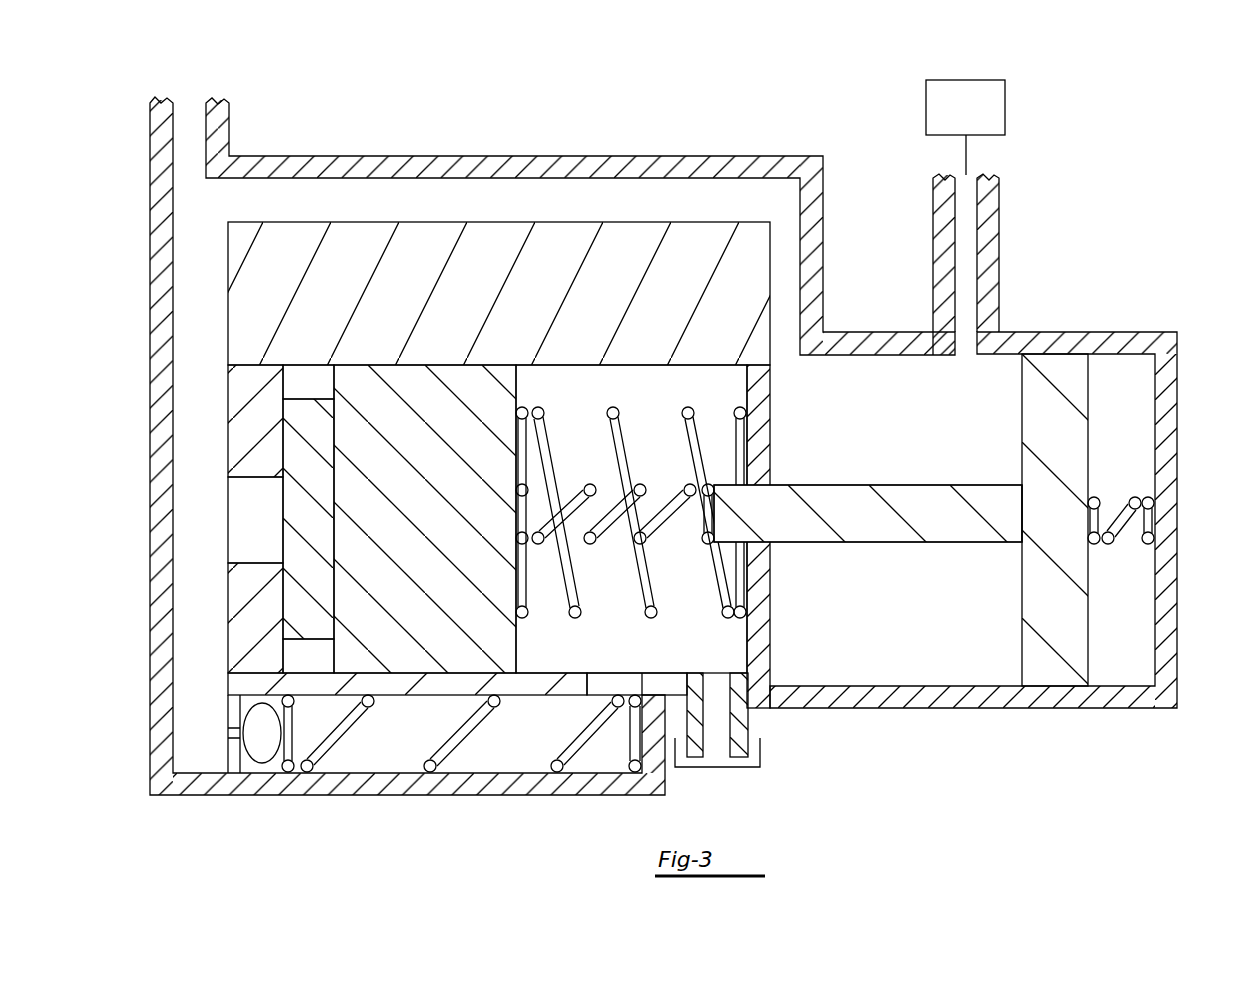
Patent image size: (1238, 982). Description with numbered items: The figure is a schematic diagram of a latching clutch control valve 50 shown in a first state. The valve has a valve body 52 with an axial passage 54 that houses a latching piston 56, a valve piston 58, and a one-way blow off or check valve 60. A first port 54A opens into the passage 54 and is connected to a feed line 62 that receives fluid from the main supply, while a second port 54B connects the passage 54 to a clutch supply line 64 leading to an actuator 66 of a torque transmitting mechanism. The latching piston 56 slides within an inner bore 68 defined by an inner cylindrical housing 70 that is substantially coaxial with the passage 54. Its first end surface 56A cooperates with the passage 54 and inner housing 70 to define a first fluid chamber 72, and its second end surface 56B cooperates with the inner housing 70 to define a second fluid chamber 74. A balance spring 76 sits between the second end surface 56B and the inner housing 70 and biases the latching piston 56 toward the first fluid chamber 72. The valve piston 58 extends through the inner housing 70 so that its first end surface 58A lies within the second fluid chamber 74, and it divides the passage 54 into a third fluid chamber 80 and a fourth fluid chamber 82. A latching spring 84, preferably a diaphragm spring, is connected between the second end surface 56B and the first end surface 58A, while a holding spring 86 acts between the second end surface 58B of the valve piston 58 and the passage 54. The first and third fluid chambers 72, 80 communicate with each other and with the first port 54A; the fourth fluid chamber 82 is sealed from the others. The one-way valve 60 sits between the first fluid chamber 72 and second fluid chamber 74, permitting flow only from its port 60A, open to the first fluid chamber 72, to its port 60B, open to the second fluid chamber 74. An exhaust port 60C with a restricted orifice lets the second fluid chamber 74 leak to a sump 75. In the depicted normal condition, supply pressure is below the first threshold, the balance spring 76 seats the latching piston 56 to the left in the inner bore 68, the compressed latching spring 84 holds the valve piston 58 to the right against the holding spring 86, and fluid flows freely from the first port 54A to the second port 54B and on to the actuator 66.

The latching clutch control valve 50 is at (1037, 82).
The valve body 52 is at (691, 399).
The axial passage 54 is at (527, 178).
The first port 54A is at (198, 117).
The second port 54B is at (965, 355).
The latching piston 56 is at (385, 530).
The first end surface 56A is at (278, 527).
The second end surface 56B is at (528, 470).
The valve piston 58 is at (936, 520).
The first end surface 58A is at (700, 517).
The second end surface 58B is at (1090, 448).
The one-way valve 60 is at (428, 740).
The port 60A is at (228, 735).
The port 60B is at (628, 685).
The exhaust port 60C is at (717, 683).
The feed line 62 is at (205, 140).
The clutch supply line 64 is at (967, 225).
The actuator 66 is at (977, 117).
The inner bore 68 is at (550, 365).
The inner cylindrical housing 70 is at (534, 279).
The first fluid chamber 72 is at (186, 467).
The second fluid chamber 74 is at (667, 443).
The sump 75 is at (760, 752).
The balance spring 76 is at (631, 496).
The third fluid chamber 80 is at (847, 362).
The fourth fluid chamber 82 is at (1137, 475).
The latching spring 84 is at (603, 540).
The holding spring 86 is at (1120, 548).